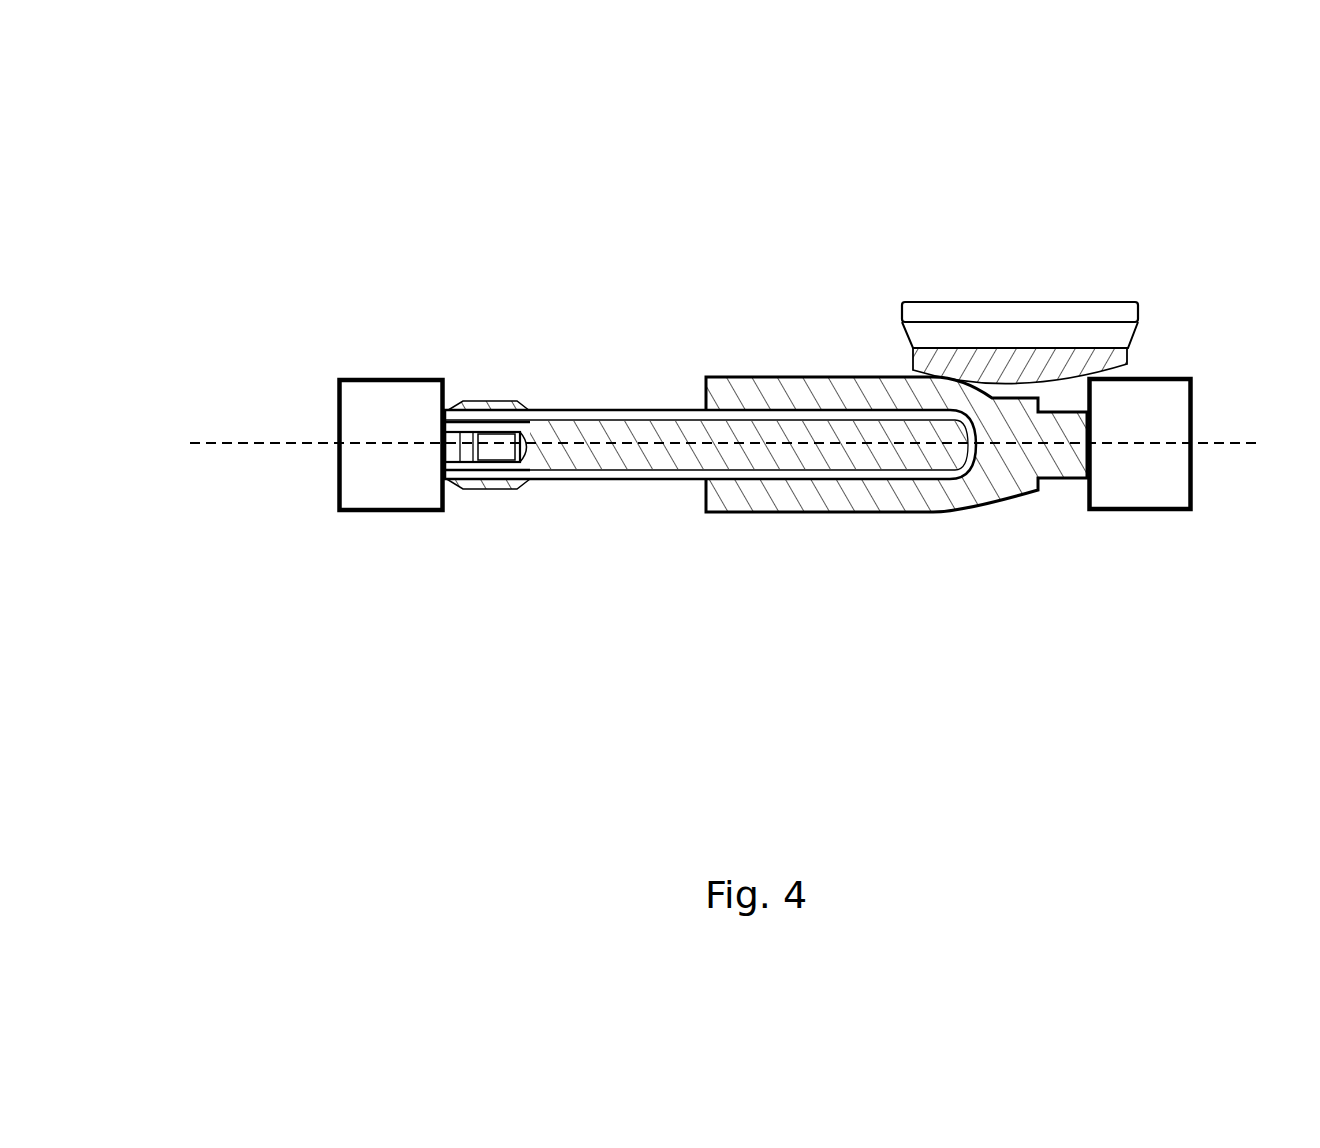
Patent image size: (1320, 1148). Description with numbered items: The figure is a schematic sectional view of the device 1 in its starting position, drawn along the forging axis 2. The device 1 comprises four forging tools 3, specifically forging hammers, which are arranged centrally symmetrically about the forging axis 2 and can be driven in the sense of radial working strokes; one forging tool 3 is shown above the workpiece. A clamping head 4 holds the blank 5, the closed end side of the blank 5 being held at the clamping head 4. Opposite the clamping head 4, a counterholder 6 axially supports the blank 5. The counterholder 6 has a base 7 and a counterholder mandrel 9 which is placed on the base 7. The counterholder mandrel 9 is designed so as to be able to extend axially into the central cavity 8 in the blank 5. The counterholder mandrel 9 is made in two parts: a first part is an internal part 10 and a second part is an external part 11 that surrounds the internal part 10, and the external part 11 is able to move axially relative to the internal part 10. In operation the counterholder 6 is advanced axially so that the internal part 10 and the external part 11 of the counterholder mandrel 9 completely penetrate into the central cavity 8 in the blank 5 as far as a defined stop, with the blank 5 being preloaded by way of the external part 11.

The device 1 is at (234, 106).
The forging axis 2 is at (282, 443).
The forging tool 3 is at (1037, 275).
The clamping head 4 is at (1164, 337).
The blank 5 is at (766, 346).
The counterholder 6 is at (714, 346).
The base 7 is at (384, 355).
The central cavity 8 is at (787, 410).
The counterholder mandrel 9 is at (710, 338).
The internal part 10 is at (634, 452).
The external part 11 is at (585, 412).